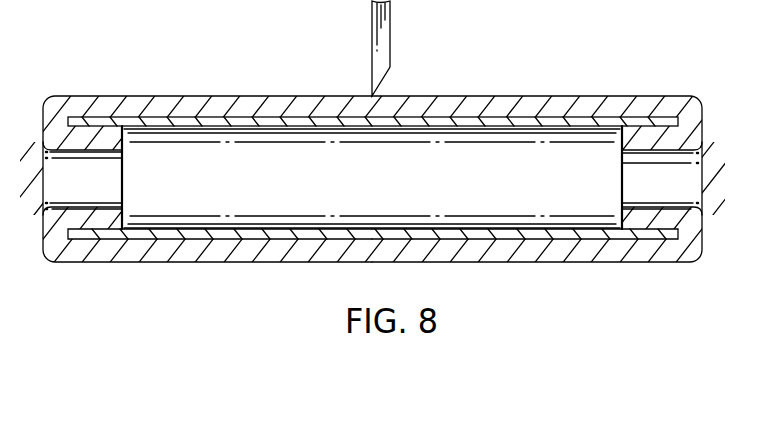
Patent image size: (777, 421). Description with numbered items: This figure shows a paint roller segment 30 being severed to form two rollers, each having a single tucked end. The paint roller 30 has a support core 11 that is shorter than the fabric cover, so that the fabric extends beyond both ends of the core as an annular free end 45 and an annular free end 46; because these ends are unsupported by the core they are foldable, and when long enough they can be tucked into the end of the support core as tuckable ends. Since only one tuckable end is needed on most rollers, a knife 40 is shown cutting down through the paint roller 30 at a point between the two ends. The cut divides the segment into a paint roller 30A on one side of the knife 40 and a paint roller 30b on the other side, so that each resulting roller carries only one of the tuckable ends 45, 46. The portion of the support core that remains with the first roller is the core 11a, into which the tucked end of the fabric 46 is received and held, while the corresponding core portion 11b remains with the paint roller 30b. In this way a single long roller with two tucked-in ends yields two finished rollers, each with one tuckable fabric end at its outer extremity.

The paint roller 30 is at (388, 137).
The paint roller 30A is at (200, 96).
The paint roller 30b is at (532, 99).
The knife 40 is at (390, 50).
The support core 11 is at (362, 228).
The core 11a is at (198, 228).
The second portion of inner member 11b is at (506, 228).
The annular free end 45 is at (632, 143).
The annular free end 46 is at (123, 150).